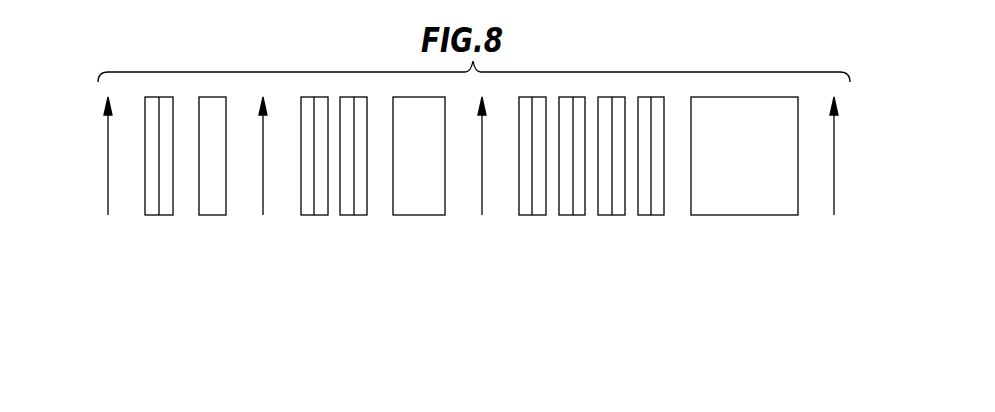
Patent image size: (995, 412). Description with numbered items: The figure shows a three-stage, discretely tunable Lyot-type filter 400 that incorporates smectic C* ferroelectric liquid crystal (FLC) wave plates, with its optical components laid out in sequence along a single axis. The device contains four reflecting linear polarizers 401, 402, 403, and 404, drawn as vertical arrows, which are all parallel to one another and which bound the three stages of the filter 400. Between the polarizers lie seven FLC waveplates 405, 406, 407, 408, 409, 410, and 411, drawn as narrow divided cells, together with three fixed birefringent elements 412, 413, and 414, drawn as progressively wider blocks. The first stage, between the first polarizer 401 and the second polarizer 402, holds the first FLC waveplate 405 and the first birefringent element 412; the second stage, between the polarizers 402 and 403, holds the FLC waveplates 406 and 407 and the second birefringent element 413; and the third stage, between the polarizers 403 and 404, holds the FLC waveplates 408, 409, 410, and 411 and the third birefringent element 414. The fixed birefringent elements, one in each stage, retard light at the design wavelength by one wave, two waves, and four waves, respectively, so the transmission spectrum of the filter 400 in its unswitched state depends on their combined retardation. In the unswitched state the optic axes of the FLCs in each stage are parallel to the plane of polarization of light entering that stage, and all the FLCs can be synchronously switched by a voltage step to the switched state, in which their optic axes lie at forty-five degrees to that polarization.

The Lyot-type filter 400 is at (476, 282).
The reflecting linear polarizer 401 is at (108, 155).
The reflecting linear polarizer 402 is at (263, 205).
The reflecting linear polarizer 403 is at (482, 200).
The reflecting linear polarizer 404 is at (835, 193).
The FLC waveplate 405 is at (160, 216).
The FLC waveplate 406 is at (314, 216).
The FLC waveplate 407 is at (346, 216).
The FLC waveplate 408 is at (532, 216).
The FLC waveplate 409 is at (573, 216).
The FLC waveplate 410 is at (607, 216).
The FLC waveplate 411 is at (655, 216).
The birefringent element 412 is at (214, 216).
The birefringent element 413 is at (420, 216).
The birefringent element 414 is at (748, 216).